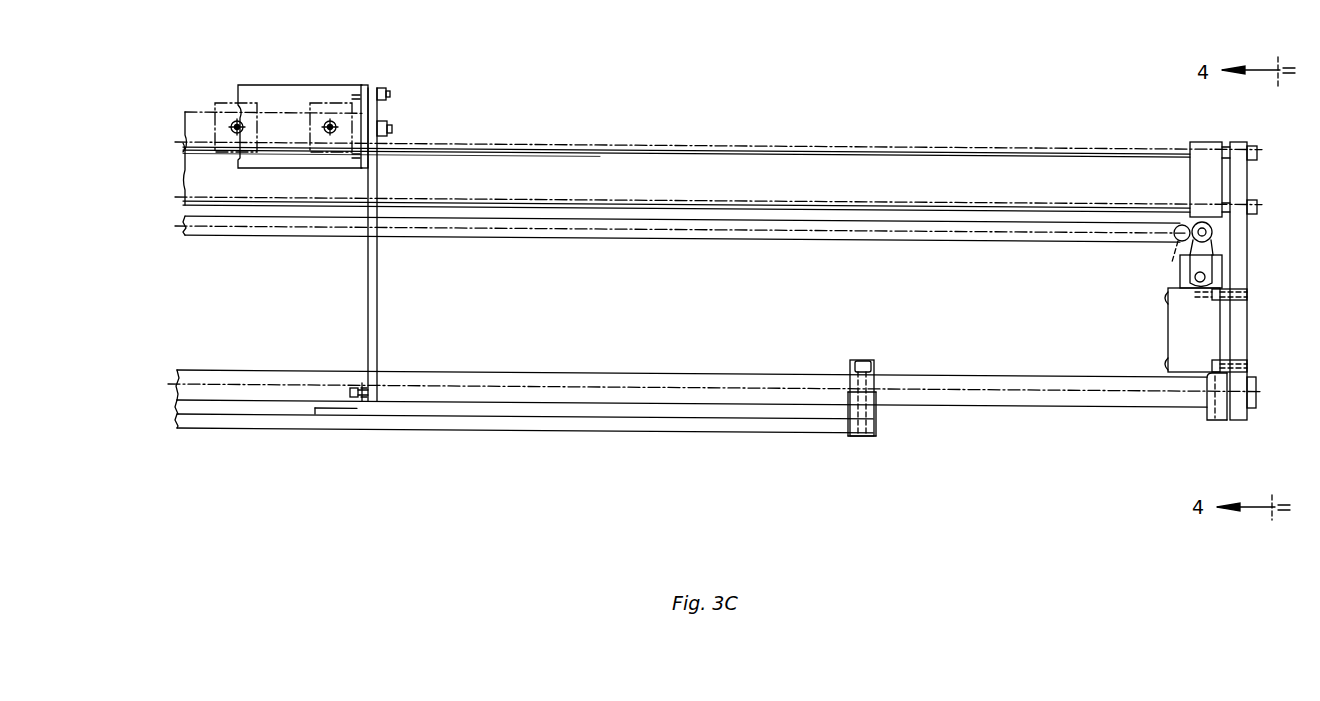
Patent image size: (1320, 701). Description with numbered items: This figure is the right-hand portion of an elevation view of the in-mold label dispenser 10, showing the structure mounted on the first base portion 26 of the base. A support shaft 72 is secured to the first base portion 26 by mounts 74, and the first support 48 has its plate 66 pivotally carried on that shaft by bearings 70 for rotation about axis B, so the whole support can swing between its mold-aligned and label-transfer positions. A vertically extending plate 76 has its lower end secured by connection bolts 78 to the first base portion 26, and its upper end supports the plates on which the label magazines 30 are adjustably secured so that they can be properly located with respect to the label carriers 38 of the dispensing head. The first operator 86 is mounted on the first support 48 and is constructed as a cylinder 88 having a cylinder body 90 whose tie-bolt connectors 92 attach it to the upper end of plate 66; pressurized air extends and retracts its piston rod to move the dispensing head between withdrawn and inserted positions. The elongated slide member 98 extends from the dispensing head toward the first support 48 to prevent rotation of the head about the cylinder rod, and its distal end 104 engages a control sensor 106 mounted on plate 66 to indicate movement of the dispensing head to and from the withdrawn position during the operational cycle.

The in-mold label dispenser 10 is at (406, 46).
The label magazines 30 is at (288, 87).
The label carriers 38 is at (245, 133).
The first operator 86 is at (804, 136).
The cylinder 88 is at (736, 160).
The cylinder body 90 is at (910, 166).
The tie-bolt connectors 92 is at (1033, 206).
The elongated slide member 98 is at (981, 238).
The vertically extending plates 76 is at (378, 302).
The connection bolts 78 is at (355, 398).
The support shaft 72 is at (988, 400).
The first base portion 26 is at (817, 434).
The mounts 74 is at (875, 366).
The axis B is at (1086, 396).
The bearings 70 is at (1213, 412).
The first support 48 is at (1249, 255).
The distal end 104 is at (1173, 228).
The control sensor 106 is at (1178, 275).
The plate 66 is at (1249, 282).